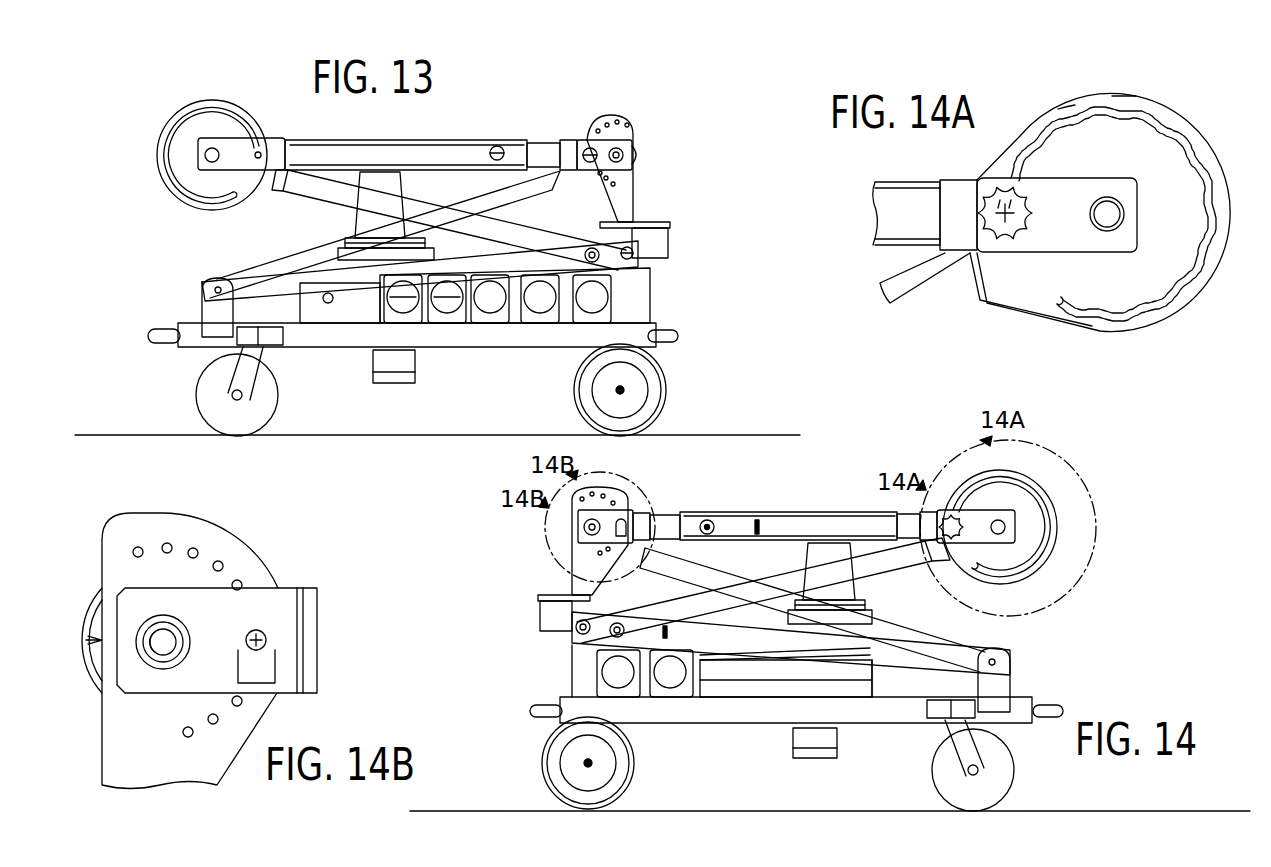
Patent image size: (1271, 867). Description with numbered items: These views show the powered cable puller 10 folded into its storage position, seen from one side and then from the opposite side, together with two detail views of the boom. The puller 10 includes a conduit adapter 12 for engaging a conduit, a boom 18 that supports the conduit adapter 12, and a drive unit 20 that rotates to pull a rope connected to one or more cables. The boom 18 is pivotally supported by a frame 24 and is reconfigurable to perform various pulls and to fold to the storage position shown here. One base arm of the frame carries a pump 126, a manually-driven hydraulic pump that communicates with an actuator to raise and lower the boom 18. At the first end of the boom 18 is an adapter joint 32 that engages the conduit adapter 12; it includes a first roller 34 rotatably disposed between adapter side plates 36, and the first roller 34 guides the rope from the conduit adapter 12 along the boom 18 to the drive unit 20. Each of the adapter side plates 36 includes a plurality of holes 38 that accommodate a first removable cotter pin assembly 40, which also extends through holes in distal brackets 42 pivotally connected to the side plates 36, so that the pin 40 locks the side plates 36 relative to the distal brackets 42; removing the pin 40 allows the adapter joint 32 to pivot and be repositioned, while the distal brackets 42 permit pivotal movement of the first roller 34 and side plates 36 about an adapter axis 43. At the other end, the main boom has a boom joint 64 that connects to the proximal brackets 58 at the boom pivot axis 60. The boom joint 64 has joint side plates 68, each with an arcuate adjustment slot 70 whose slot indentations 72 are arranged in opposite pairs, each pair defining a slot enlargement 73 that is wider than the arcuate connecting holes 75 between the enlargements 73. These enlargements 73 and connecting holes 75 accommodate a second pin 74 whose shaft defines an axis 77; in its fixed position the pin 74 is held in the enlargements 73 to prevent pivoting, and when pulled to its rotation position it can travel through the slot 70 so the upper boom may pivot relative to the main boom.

In FIG. 13, the powered cable puller 10 is at (497, 77).
In FIG. 14, the powered cable puller 10 is at (857, 434).
In FIG. 13, the conduit adapter 12 is at (640, 216).
In FIG. 14, the conduit adapter 12 is at (563, 583).
In FIG. 13, the boom 18 is at (486, 139).
In FIG. 14, the boom 18 is at (800, 510).
In FIG. 13, the drive unit 20 is at (368, 218).
In FIG. 14, the drive unit 20 is at (850, 598).
In FIG. 13, the frame 24 is at (638, 328).
In FIG. 14, the frame 24 is at (572, 705).
In FIG. 14, the pump 126 is at (731, 678).
In FIG. 14B, the adapter joint 32 is at (205, 543).
In FIG. 14B, the first roller 34 is at (88, 606).
In FIG. 14B, the adapter side plates 36 is at (162, 565).
In FIG. 14B, the holes 38 is at (225, 568).
In FIG. 14B, the first removable cotter pin assembly 40 is at (259, 631).
In FIG. 14B, the distal brackets 42 is at (283, 690).
In FIG. 14B, the adapter axis 43 is at (160, 651).
In FIG. 14A, the proximal brackets 58 is at (1085, 186).
In FIG. 14A, the boom pivot axis 60 is at (1108, 214).
In FIG. 14A, the boom joint 64 is at (1022, 340).
In FIG. 14A, the joint side plates 68 is at (1020, 300).
In FIG. 14A, the arcuate adjustment slot 70 is at (1066, 117).
In FIG. 14A, the slot indentations 72 is at (1132, 99).
In FIG. 14A, the slot enlargements 73 is at (1032, 135).
In FIG. 14A, the second pin 74 is at (996, 194).
In FIG. 14A, the arcuate connecting holes 75 is at (1170, 130).
In FIG. 14A, the axis 77 is at (1006, 222).